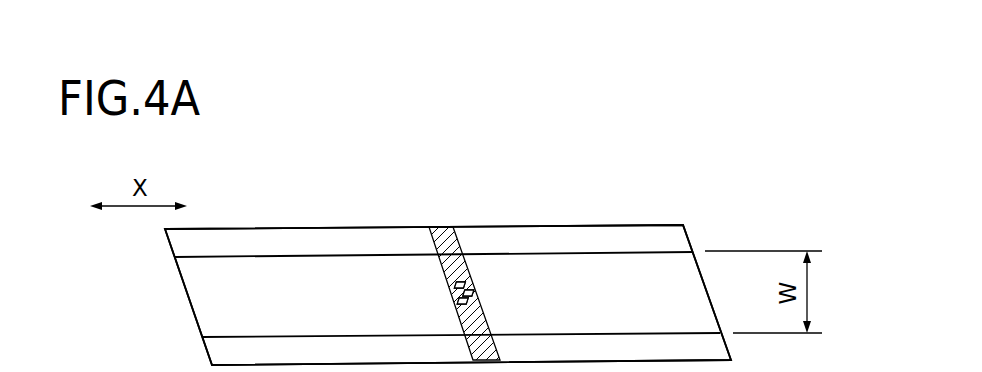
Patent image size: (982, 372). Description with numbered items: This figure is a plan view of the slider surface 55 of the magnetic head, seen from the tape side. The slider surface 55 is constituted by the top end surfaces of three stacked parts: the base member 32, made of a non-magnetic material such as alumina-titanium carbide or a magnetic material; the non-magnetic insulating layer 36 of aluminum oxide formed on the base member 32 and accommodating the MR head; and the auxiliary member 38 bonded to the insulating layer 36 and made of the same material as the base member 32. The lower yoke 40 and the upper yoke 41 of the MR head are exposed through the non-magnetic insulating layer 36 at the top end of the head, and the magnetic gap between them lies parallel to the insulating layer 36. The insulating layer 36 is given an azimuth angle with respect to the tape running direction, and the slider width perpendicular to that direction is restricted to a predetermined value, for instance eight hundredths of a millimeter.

The base member 32 is at (620, 268).
The non-magnetic insulating layer 36 is at (442, 230).
The auxiliary member 38 is at (272, 280).
The lower yoke 40 is at (470, 272).
The upper yoke 41 is at (470, 272).
The slider surface 55 is at (180, 340).